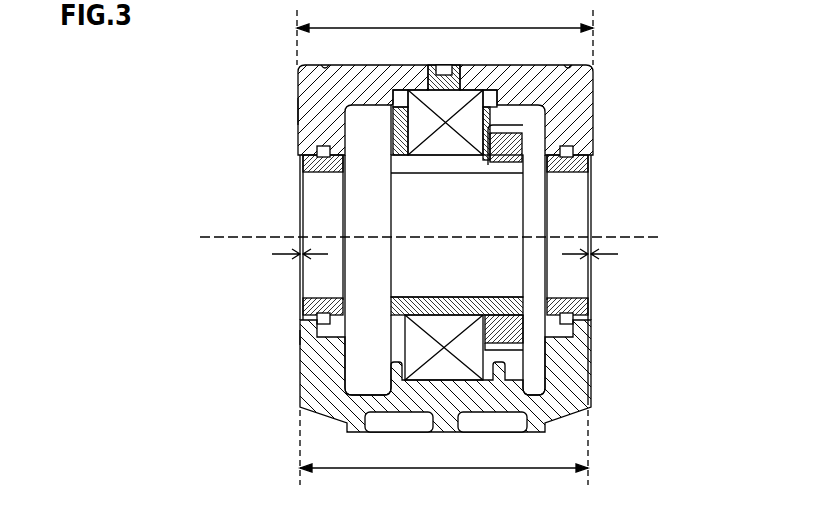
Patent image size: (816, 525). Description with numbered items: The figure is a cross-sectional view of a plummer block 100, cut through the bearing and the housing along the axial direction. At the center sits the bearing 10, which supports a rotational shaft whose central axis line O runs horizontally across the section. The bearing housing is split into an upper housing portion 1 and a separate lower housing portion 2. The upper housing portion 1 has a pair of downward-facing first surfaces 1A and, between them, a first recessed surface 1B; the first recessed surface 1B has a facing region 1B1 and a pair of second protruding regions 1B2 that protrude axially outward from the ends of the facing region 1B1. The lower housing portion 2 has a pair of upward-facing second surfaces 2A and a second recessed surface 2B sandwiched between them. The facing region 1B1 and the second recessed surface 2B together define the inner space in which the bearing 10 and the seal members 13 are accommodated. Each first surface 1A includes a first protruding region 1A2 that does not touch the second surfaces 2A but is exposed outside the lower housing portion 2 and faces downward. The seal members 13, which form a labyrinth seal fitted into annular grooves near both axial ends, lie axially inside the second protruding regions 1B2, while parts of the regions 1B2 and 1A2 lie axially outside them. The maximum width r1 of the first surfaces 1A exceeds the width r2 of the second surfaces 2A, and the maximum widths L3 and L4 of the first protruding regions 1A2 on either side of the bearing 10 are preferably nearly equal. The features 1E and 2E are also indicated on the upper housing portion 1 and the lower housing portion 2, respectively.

The plummer block 100 is at (732, 35).
The upper housing portion 1 is at (571, 112).
The first surface 1A is at (444, 280).
The first protruding region 1A2 is at (298, 240).
The first recessed surface 1B is at (441, 103).
The facing region 1B1 is at (402, 107).
The second protruding region 1B2 is at (300, 160).
The first end face 1E is at (298, 110).
The lower housing portion 2 is at (566, 370).
The second surface 2A is at (573, 237).
The second recessed surface 2B is at (300, 312).
The second end face 2E is at (302, 337).
The bearing 10 is at (470, 118).
The seal member 13 is at (300, 166).
The central axis line O is at (205, 237).
The maximum width L3 is at (590, 258).
The maximum width L4 is at (298, 258).
The maximum width r1 is at (445, 36).
The width r2 is at (437, 469).